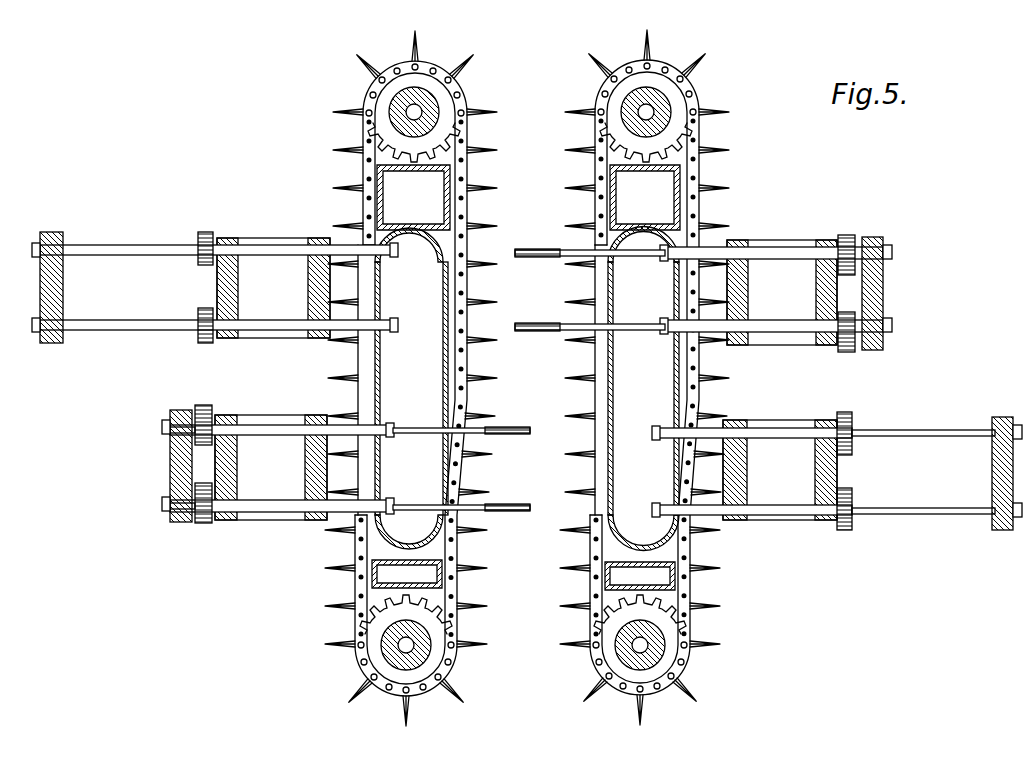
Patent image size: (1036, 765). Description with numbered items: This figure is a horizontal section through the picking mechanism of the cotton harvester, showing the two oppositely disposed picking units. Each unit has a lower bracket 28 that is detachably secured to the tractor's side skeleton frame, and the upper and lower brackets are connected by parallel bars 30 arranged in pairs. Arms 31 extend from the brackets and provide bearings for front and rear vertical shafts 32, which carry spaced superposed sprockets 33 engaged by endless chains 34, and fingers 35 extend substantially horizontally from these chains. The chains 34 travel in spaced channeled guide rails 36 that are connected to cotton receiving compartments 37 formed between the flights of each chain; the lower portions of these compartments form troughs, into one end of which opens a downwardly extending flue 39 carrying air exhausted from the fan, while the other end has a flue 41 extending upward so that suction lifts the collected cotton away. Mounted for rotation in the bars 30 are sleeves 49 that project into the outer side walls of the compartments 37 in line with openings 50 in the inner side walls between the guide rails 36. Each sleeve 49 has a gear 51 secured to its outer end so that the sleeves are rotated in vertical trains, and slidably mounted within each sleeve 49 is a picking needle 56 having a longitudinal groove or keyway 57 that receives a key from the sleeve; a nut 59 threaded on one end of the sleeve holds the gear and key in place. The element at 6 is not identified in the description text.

The frame arch 6 is at (400, 252).
The lower bracket 28 is at (300, 248).
The parallel bars 30 is at (318, 283).
The arms 31 is at (360, 147).
The vertical shaft 32 is at (422, 112).
The sprocket 33 is at (422, 92).
The endless chain 34 is at (458, 607).
The finger 35 is at (472, 232).
The channeled guide rail 36 is at (455, 398).
The cotton receiving compartment 37 is at (383, 382).
The flue 39 is at (523, 575).
The flue 41 is at (528, 197).
The sleeve 49 is at (380, 327).
The opening 50 is at (447, 325).
The gear 51 is at (203, 282).
The picking needle 56 is at (143, 272).
The longitudinal groove or keyway 57 is at (87, 320).
The nut 59 is at (200, 320).